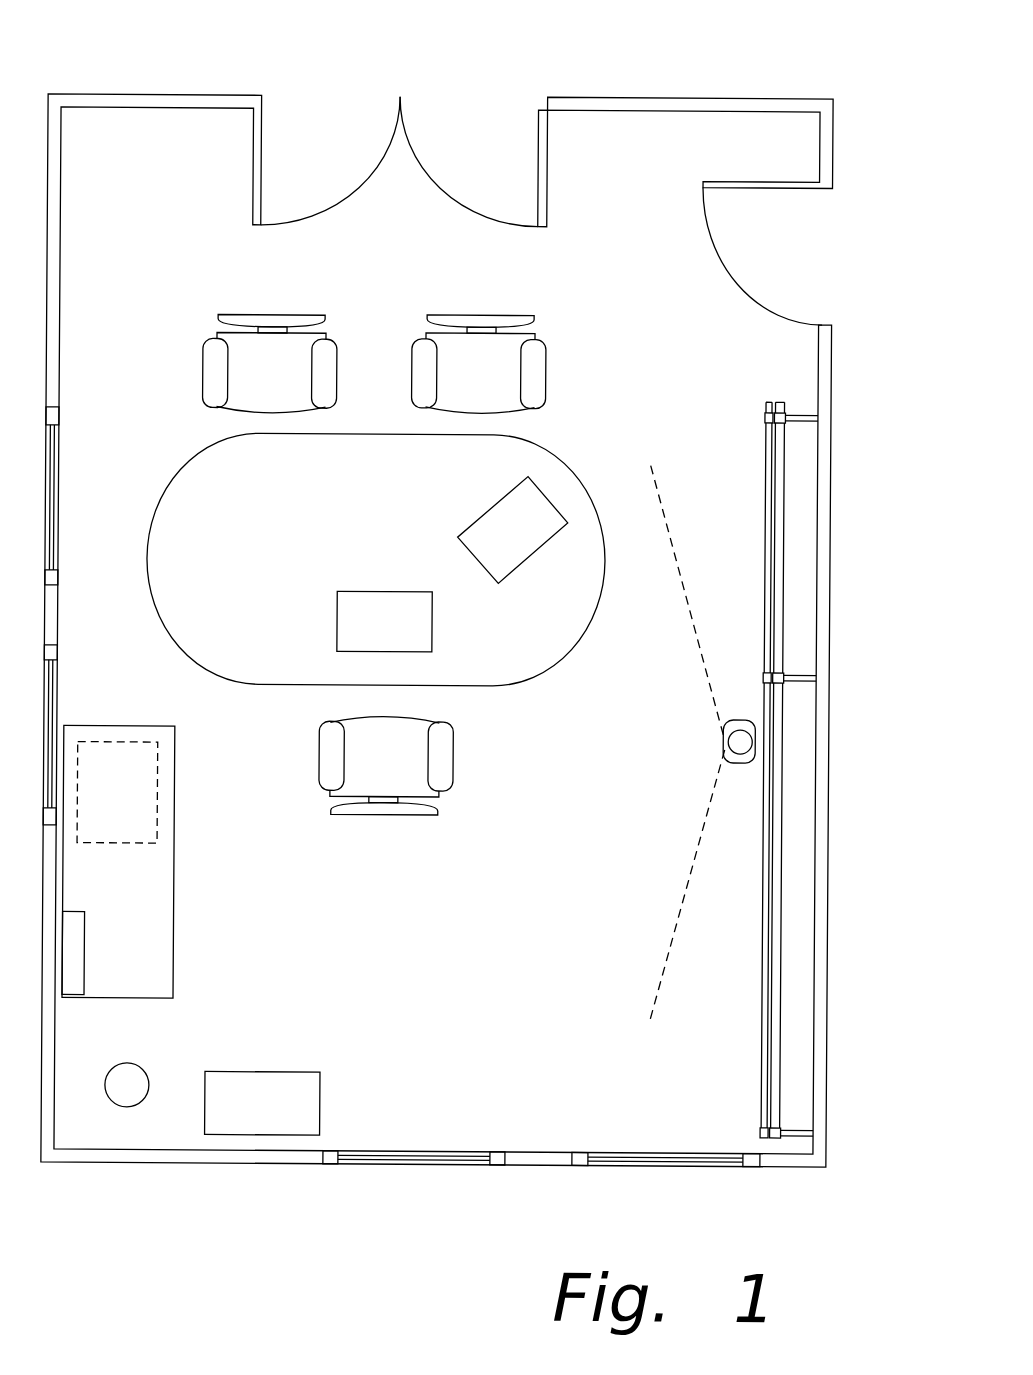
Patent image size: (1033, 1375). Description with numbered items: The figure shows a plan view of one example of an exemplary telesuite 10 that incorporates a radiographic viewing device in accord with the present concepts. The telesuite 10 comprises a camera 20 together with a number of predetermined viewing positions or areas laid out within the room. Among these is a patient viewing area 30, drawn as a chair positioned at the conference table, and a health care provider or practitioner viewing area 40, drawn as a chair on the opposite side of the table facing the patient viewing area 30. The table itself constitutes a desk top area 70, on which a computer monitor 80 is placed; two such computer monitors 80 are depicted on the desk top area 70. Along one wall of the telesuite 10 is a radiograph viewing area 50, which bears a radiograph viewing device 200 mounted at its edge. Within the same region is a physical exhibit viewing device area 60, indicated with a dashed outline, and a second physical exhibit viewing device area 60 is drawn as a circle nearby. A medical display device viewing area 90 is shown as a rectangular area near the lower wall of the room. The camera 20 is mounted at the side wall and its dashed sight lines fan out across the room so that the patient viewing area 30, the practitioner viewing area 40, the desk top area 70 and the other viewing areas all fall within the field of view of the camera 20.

The telesuite 10 is at (729, 70).
The camera 20 is at (742, 761).
The patient viewing area 30 is at (467, 388).
The health care provider or practitioner viewing area 40 is at (373, 764).
The radiograph viewing area 50 is at (132, 950).
The physical exhibit viewing device area 60 is at (130, 808).
The desk top area 70 is at (311, 521).
The computer monitor 80 is at (524, 541).
The medical display device viewing area 90 is at (255, 1115).
The radiograph viewing device 200 is at (79, 1000).